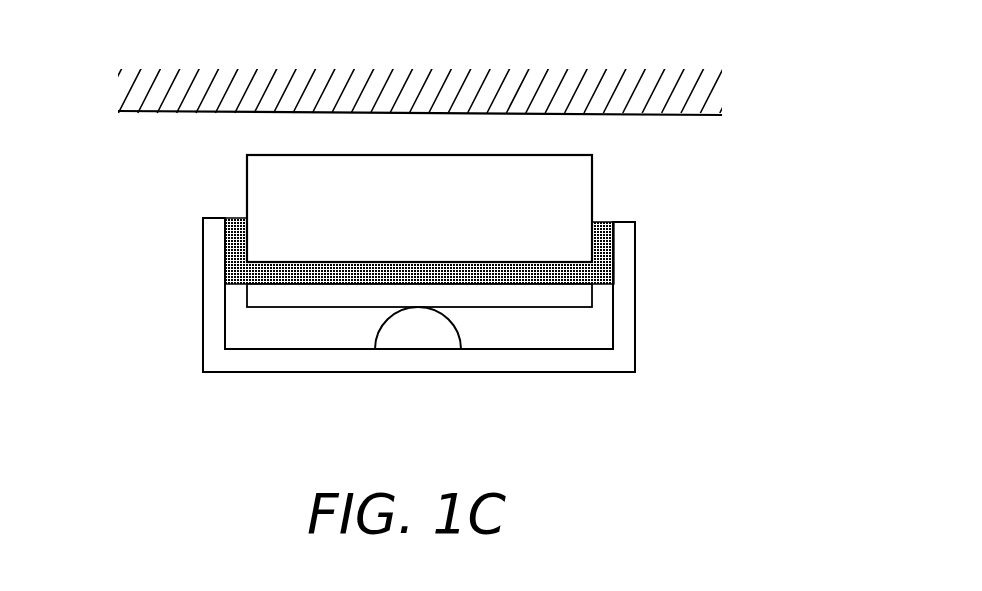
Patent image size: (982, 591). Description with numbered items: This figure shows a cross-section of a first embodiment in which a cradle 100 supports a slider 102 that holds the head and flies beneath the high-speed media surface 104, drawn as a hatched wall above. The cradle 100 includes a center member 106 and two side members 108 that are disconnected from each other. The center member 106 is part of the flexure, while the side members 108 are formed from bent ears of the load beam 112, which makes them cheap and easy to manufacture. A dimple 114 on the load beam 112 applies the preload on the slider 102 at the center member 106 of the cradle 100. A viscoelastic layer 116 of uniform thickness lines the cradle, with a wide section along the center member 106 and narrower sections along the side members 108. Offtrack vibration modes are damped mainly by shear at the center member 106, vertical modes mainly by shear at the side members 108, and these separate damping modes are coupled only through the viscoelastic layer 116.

The cradle 100 is at (762, 161).
The slider 102 is at (592, 178).
The high-speed media surface 104 is at (158, 110).
The center member 106 is at (548, 310).
The side members 108 is at (203, 262).
The load beam 112 is at (459, 372).
The dimple 114 is at (460, 327).
The viscoelastic layer 116 is at (603, 222).